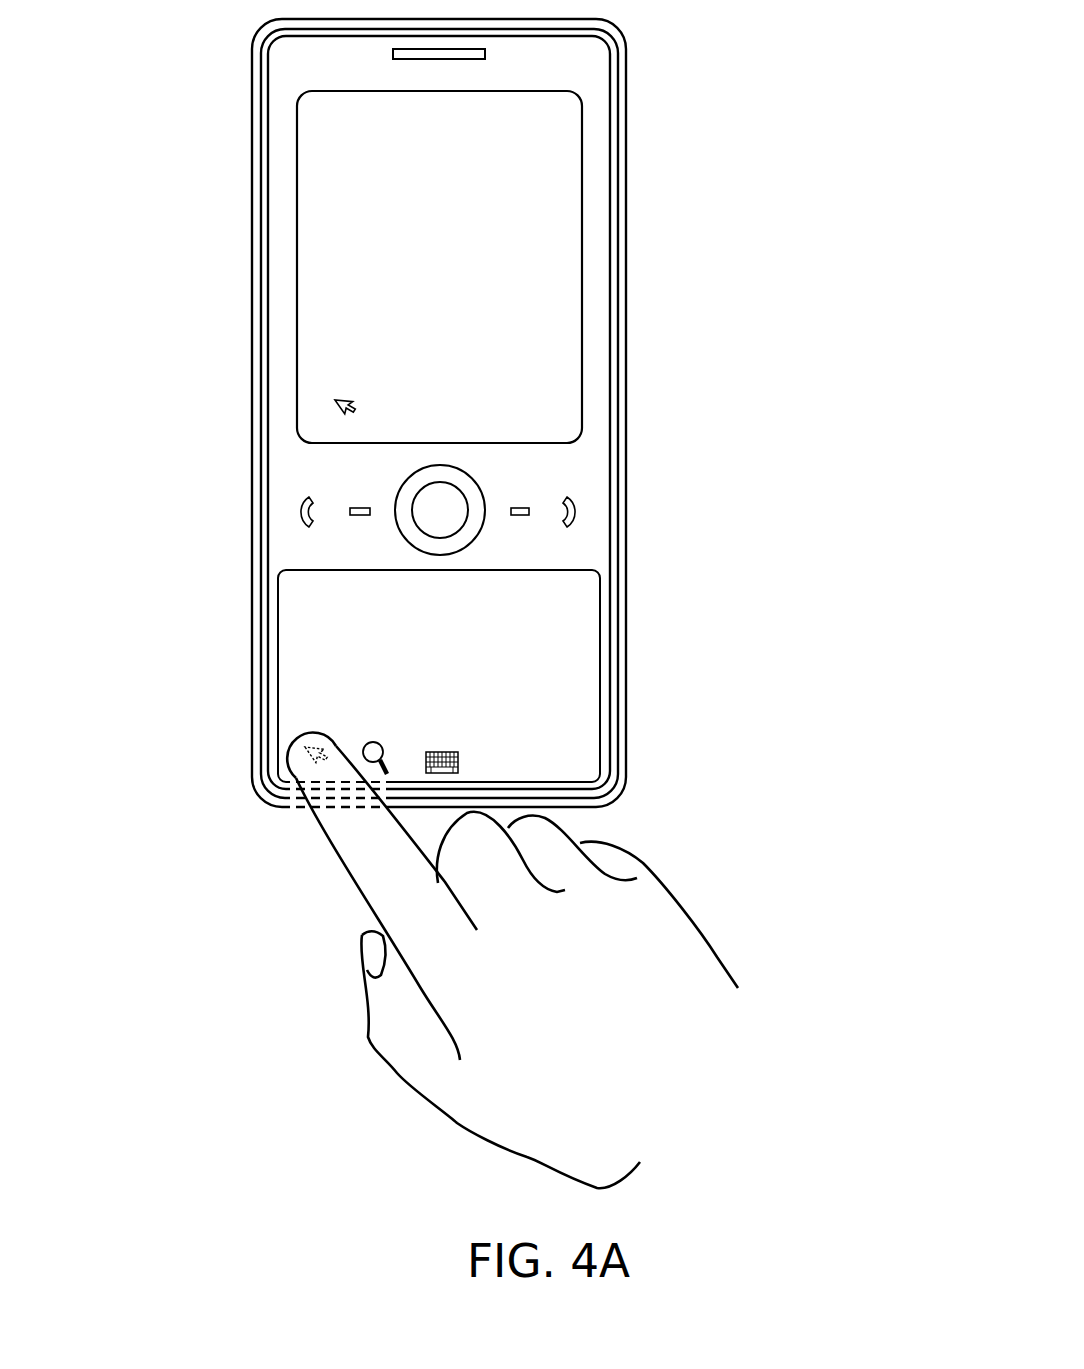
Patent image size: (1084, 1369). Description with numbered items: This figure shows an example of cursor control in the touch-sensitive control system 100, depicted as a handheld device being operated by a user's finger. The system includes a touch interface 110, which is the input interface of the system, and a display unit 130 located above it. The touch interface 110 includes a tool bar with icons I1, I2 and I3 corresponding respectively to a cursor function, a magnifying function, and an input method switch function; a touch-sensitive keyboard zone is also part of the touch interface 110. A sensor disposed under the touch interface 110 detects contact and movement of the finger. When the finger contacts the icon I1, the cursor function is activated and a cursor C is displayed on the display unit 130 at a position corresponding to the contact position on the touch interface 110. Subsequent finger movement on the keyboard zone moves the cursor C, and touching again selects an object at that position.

The touch-sensitive control system 100 is at (618, 62).
The display unit 130 is at (582, 231).
The touch interface 110 is at (600, 603).
The cursor C is at (335, 400).
The cursor function icon I1 is at (313, 770).
The magnifying function icon I2 is at (369, 777).
The input method switch function icon I3 is at (443, 776).